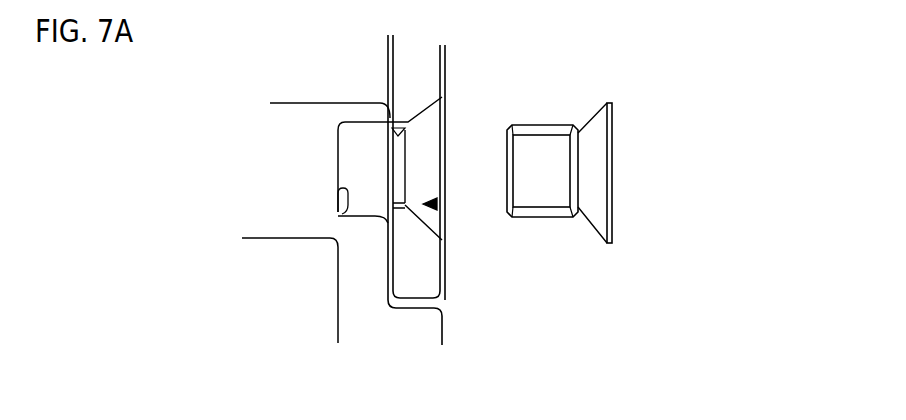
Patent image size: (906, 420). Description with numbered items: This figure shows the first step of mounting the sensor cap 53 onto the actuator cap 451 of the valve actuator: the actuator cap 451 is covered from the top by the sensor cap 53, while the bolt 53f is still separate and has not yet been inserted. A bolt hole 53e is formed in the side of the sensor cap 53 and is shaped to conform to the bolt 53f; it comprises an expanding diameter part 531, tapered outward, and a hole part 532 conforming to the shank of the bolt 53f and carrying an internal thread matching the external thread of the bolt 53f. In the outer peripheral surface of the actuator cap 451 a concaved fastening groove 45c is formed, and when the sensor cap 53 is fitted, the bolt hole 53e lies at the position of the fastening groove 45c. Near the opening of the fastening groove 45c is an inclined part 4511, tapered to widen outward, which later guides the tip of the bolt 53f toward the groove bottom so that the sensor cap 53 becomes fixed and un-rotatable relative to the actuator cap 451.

The actuator cap 451 is at (443, 320).
The inclined part 4511 is at (357, 122).
The fastening groove 45c is at (346, 198).
The sensor cap 53 is at (443, 58).
The expanding diameter part 531 is at (427, 113).
The hole part 532 is at (390, 140).
The bolt hole 53e is at (437, 204).
The bolt 53f is at (611, 162).